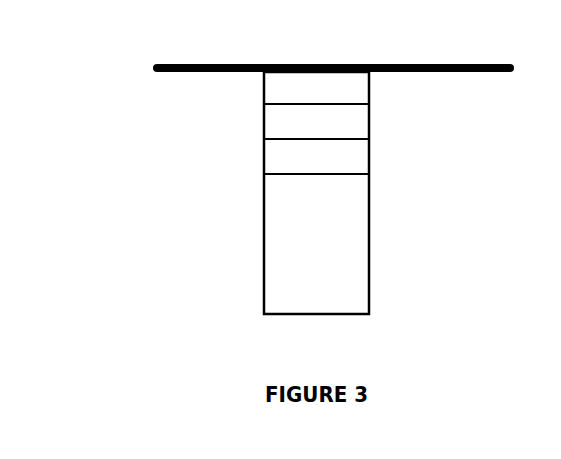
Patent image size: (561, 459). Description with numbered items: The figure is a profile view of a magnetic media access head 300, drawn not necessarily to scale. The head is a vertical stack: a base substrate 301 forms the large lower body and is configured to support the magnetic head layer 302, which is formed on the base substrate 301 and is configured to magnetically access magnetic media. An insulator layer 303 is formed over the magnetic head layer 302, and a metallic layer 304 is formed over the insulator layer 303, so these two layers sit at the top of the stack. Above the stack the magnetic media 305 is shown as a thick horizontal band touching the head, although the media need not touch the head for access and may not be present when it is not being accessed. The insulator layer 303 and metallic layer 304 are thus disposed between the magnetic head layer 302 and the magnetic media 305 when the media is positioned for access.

The magnetic media access head 300 is at (78, 116).
The base substrate 301 is at (282, 237).
The magnetic head layer 302 is at (350, 157).
The insulator layer 303 is at (283, 121).
The metallic layer 304 is at (350, 87).
The magnetic media 305 is at (198, 64).